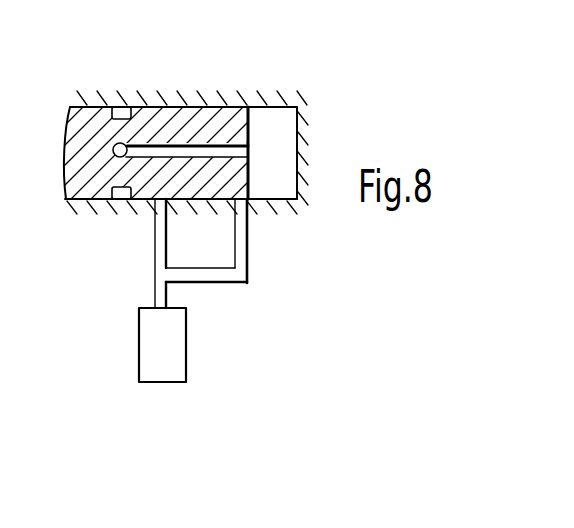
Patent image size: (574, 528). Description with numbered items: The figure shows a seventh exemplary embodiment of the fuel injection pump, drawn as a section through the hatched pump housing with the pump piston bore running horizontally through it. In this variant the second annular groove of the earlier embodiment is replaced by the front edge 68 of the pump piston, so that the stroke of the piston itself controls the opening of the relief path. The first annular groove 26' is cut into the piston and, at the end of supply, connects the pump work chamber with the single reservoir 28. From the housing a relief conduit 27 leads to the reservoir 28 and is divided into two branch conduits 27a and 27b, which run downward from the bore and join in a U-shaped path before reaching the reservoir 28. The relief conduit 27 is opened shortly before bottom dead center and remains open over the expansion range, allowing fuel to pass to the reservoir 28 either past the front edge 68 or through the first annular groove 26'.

The first annular groove 26' is at (121, 81).
The front edge of the pump piston 68 is at (249, 119).
The relief conduit 27 is at (223, 276).
The branch conduit 27a is at (245, 221).
The branch conduit 27b is at (159, 247).
The reservoir 28 is at (184, 368).